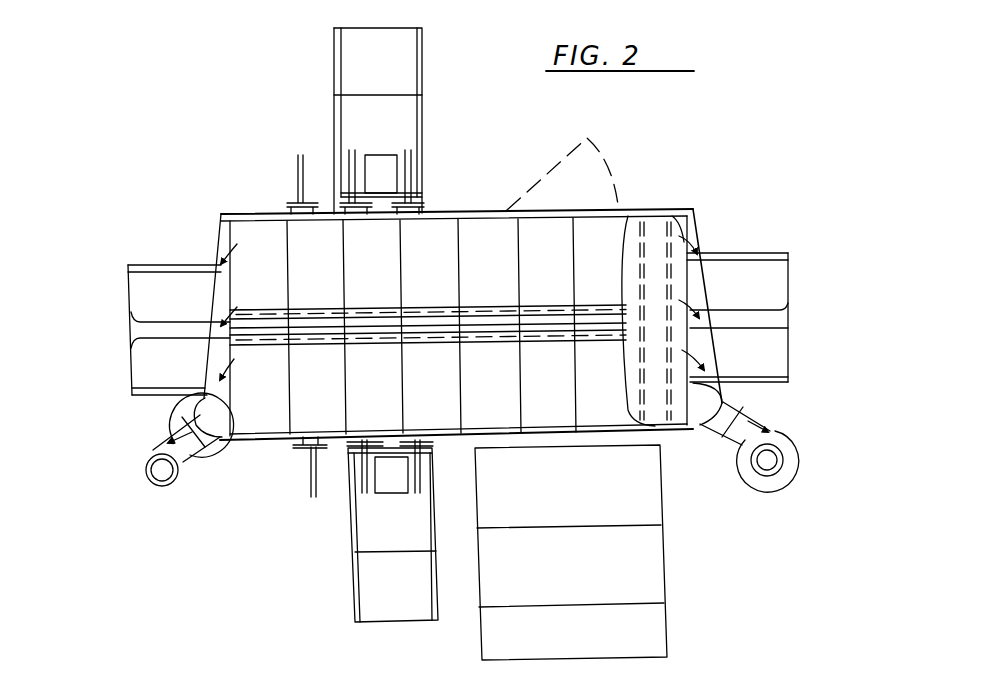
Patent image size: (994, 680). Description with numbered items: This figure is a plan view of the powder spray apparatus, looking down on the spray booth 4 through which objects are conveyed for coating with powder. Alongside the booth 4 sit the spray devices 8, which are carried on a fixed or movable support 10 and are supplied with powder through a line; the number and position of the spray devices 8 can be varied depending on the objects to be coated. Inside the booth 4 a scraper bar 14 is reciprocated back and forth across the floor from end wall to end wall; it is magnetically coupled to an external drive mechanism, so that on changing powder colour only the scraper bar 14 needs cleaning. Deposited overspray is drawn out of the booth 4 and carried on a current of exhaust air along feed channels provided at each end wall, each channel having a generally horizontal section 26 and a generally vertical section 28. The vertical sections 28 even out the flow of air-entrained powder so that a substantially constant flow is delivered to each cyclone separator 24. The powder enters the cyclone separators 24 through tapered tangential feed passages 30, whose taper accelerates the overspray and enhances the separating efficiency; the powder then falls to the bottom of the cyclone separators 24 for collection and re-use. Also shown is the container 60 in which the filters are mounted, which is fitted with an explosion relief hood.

The spray booth 4 is at (307, 263).
The spray device 8 is at (353, 157).
The support 10 is at (358, 67).
The scraper bar 14 is at (652, 235).
The cyclone separator 24 is at (148, 487).
The horizontal section 26 is at (232, 360).
The vertical section 28 is at (723, 405).
The tapered tangential feed passage 30 is at (774, 431).
The container 60 is at (627, 563).